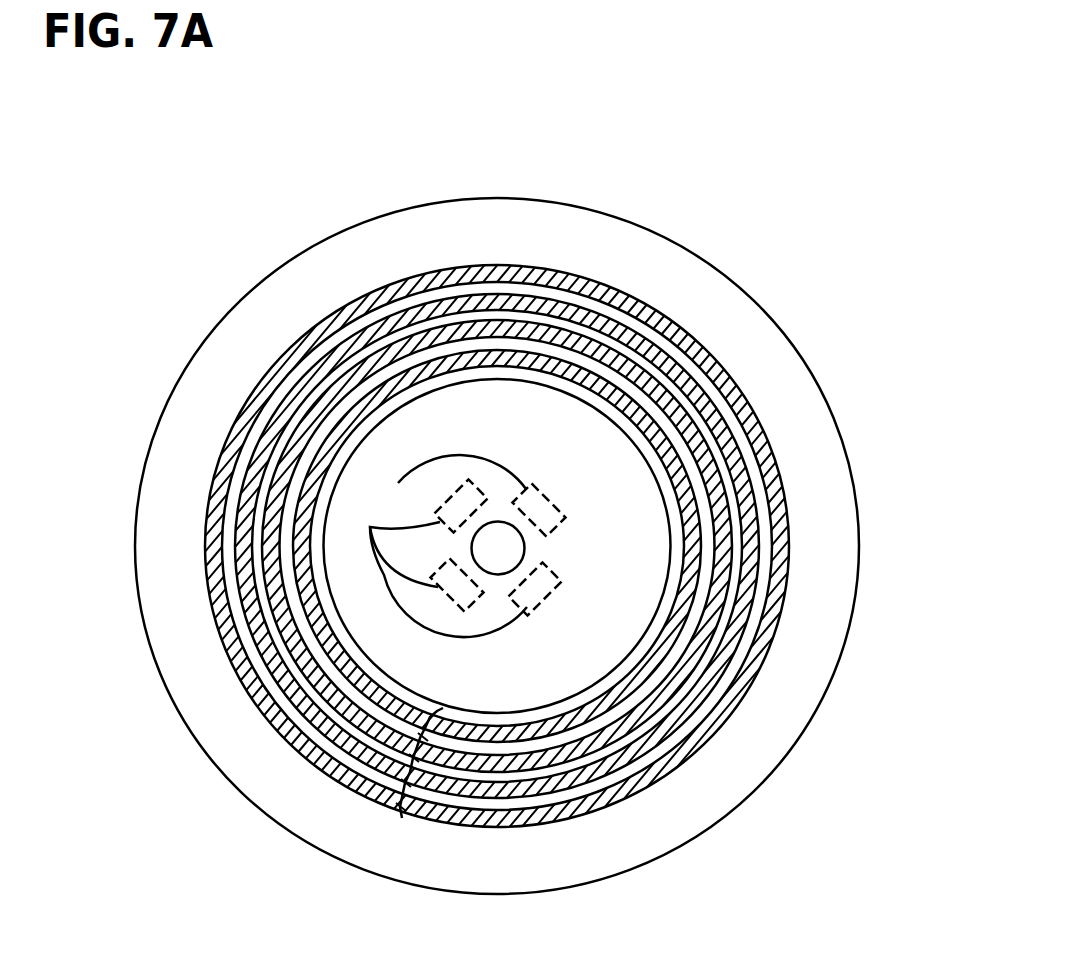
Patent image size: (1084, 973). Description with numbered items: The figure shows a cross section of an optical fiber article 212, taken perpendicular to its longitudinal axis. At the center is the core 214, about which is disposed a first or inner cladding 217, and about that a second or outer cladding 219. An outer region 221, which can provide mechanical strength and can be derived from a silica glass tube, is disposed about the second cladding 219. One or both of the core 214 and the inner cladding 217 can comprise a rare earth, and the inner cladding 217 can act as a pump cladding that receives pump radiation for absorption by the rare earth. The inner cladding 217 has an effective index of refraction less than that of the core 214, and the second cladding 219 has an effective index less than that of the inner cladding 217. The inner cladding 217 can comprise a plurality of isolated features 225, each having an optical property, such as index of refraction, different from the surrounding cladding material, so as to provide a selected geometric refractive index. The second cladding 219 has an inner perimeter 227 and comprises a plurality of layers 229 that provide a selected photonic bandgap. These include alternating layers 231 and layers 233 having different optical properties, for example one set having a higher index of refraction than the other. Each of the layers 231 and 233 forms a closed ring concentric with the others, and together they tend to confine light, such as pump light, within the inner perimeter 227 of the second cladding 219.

The optical fiber article 212 is at (284, 222).
The core 214 is at (503, 547).
The inner cladding 217 is at (492, 681).
The second cladding 219 is at (630, 830).
The outer region 221 is at (545, 248).
The isolated features 225 is at (441, 546).
The inner perimeter 227 is at (561, 708).
The plurality of layers 229 is at (413, 760).
The layers 231 is at (616, 668).
The layers 233 is at (785, 607).